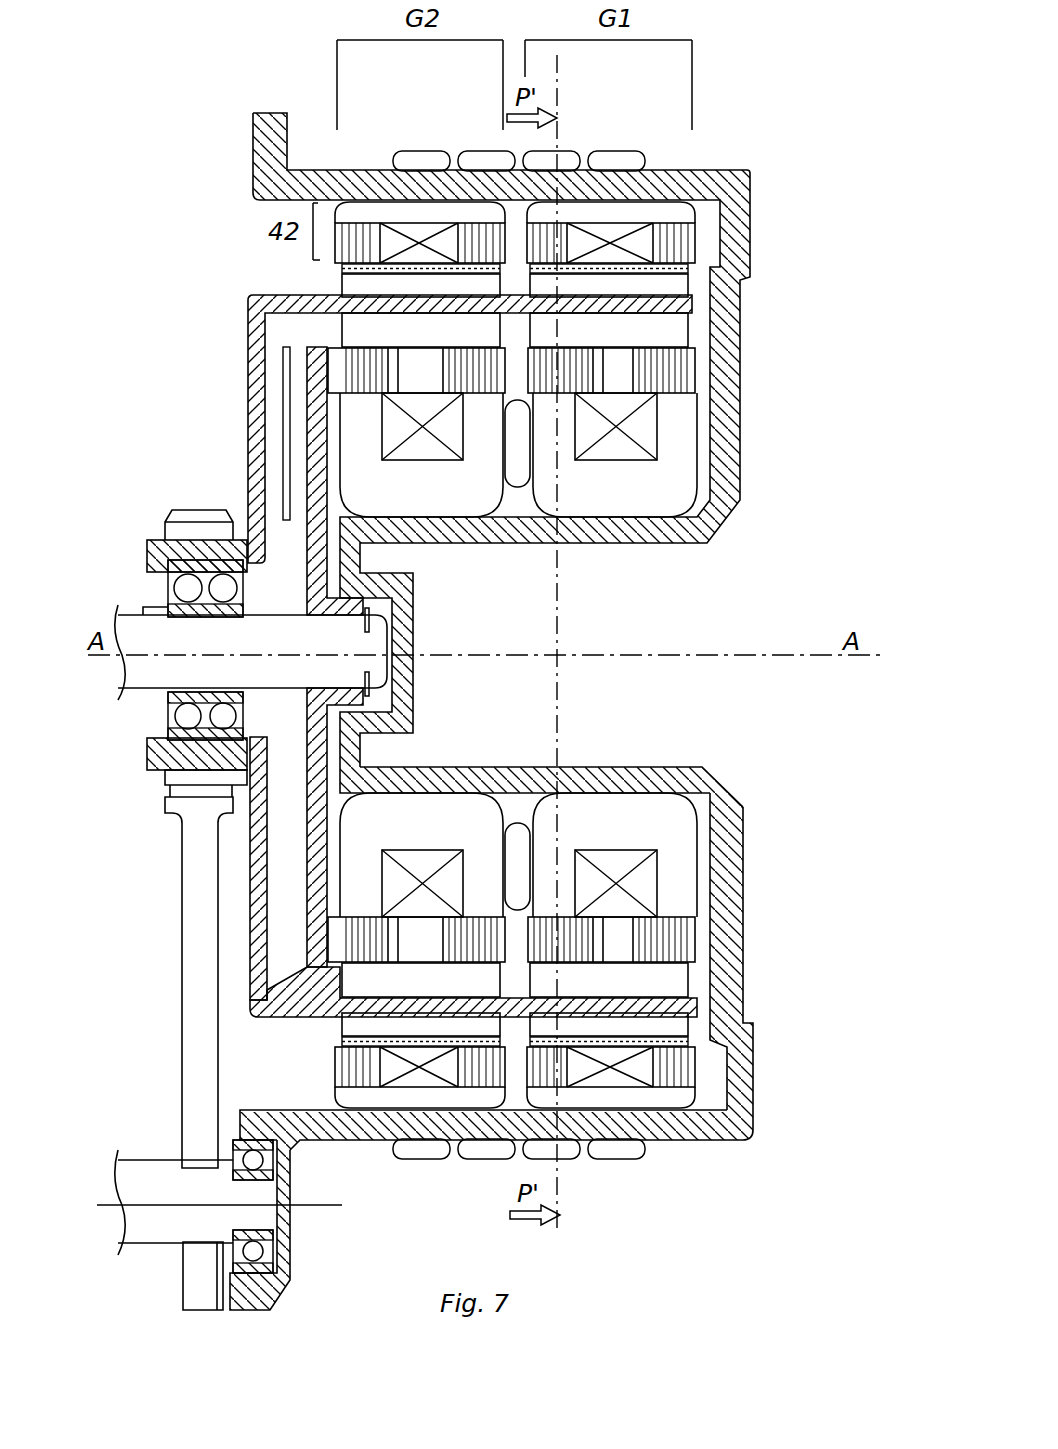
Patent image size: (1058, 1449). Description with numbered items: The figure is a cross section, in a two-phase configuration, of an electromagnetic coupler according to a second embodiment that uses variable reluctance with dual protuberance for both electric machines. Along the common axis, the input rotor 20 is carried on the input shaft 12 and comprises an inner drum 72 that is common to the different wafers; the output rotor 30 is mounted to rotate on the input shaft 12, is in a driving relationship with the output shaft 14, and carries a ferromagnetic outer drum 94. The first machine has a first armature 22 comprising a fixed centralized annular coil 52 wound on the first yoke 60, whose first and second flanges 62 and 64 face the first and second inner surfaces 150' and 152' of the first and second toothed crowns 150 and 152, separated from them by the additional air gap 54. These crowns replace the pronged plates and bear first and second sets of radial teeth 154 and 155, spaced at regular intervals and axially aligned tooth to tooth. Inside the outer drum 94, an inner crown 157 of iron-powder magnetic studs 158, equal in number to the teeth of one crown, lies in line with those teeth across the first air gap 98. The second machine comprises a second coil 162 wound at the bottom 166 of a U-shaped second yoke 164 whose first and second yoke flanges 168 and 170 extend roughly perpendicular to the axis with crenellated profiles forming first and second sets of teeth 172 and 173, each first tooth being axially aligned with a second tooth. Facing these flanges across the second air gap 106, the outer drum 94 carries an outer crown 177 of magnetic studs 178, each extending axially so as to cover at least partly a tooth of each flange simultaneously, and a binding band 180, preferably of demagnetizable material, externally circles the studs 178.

The input shaft 12 is at (145, 672).
The output shaft 14 is at (140, 1230).
The input rotor 20 is at (305, 845).
The first armature 22 is at (283, 430).
The output rotor 30 is at (250, 930).
The centralized annular coil 52 is at (658, 828).
The additional air gap 54 is at (653, 913).
The first yoke 60 is at (690, 798).
The first flange of the first yoke 62 is at (673, 863).
The second flange of the first yoke 64 is at (545, 850).
The inner drum 72 is at (705, 392).
The outer drum 94 is at (278, 293).
The first air gap 98 is at (250, 1000).
The second air gap 106 is at (697, 1043).
The first toothed crown 150 is at (688, 939).
The first inner surface 150' is at (747, 912).
The second toothed crown 152 is at (608, 846).
The second inner surface 152' is at (609, 831).
The first set of radial teeth 154 is at (667, 357).
The second set of radial teeth 155 is at (640, 328).
The inner crown 157 is at (336, 328).
The magnetic studs 158 is at (677, 987).
The second coil 162 is at (677, 1072).
The second yoke 164 is at (340, 1070).
The bottom 166 is at (730, 1140).
The first yoke flange 168 is at (748, 1120).
The second yoke flange 170 is at (518, 1078).
The first set of teeth 172 is at (690, 238).
The second set of teeth 173 is at (563, 216).
The outer crown 177 is at (692, 290).
The magnetic studs 178 is at (677, 1022).
The binding band 180 is at (345, 1042).